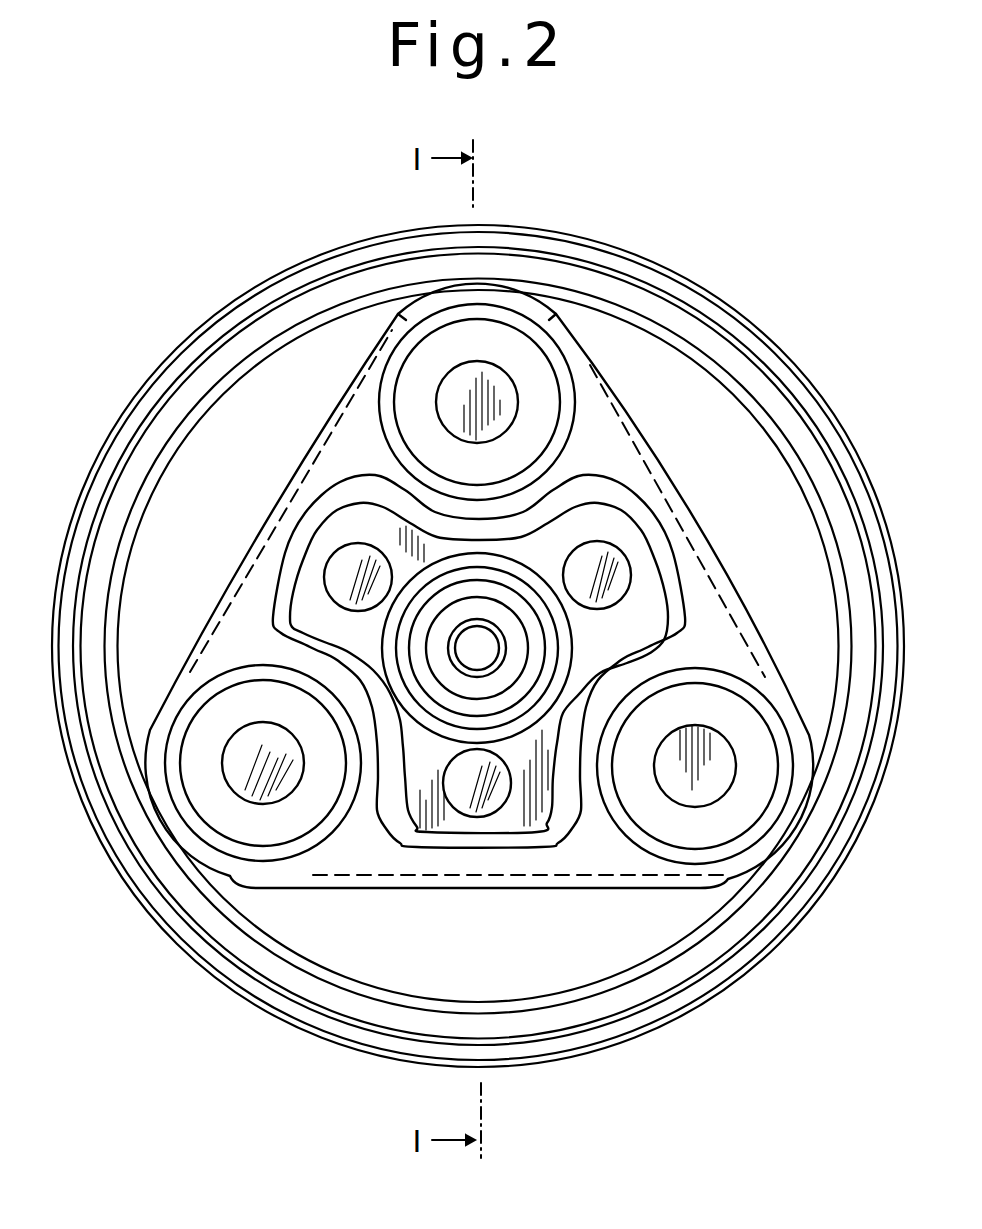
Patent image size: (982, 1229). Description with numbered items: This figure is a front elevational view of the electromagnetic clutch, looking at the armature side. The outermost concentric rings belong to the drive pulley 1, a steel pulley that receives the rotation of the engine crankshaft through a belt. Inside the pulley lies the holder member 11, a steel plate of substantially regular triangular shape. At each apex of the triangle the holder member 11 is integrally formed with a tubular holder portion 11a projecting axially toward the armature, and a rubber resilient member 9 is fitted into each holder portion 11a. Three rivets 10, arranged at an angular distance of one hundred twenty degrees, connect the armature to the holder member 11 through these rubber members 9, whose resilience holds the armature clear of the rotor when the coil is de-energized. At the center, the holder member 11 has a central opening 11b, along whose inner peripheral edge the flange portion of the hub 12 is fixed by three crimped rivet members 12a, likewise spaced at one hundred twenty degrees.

The drive pulley 1 is at (566, 236).
The resilient members 9 is at (430, 350).
The rivets 10 is at (462, 380).
The holder member 11 is at (640, 415).
The holder portions 11a is at (567, 383).
The central opening 11b is at (660, 620).
The hub 12 is at (503, 610).
The rivet members 12a is at (343, 560).